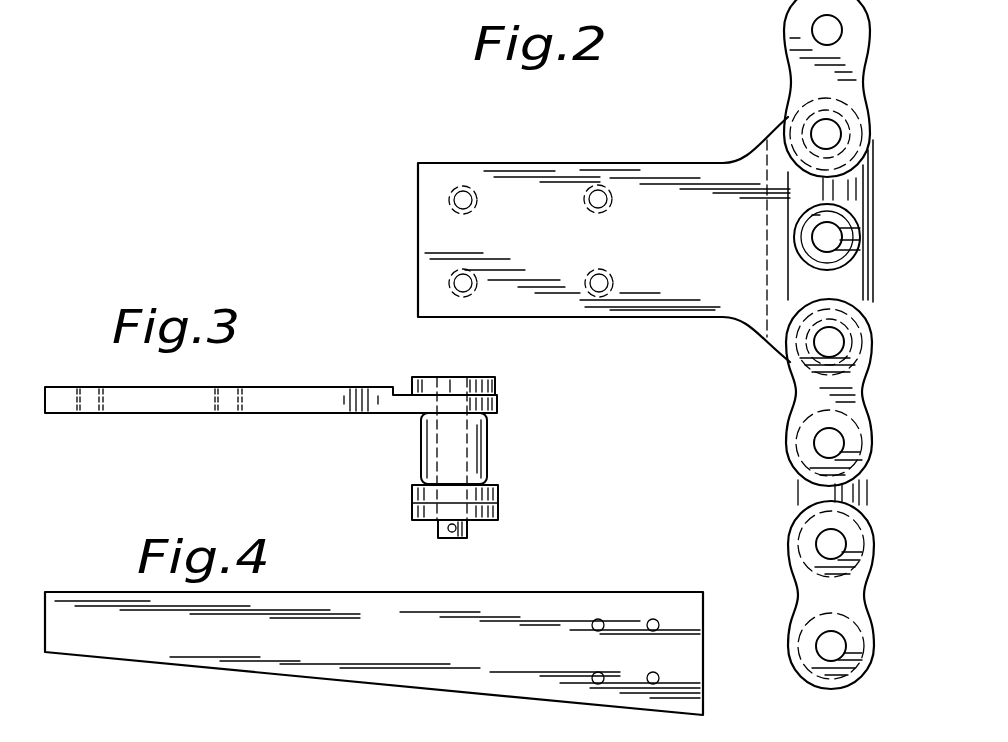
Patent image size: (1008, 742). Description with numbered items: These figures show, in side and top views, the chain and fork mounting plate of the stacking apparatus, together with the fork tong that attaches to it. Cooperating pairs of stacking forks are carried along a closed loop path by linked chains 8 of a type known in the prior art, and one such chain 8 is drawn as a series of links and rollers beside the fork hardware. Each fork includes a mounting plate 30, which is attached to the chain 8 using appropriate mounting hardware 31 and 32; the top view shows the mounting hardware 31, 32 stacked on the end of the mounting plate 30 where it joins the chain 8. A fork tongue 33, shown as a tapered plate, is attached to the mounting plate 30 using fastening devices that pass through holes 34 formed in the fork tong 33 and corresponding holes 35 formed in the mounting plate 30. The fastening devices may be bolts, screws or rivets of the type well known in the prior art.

In FIG. 2, the linked chain 8 is at (791, 48).
In FIG. 2, the mounting plate 30 is at (575, 162).
In FIG. 3, the mounting plate 30 is at (302, 385).
In FIG. 2, the mounting hardware 31 is at (841, 133).
In FIG. 3, the mounting hardware 31 is at (497, 384).
In FIG. 3, the mounting hardware 32 is at (498, 501).
In FIG. 4, the fork tongue 33 is at (420, 593).
In FIG. 4, the holes 34 is at (648, 620).
In FIG. 2, the holes 35 is at (603, 209).
In FIG. 3, the holes 35 is at (218, 404).